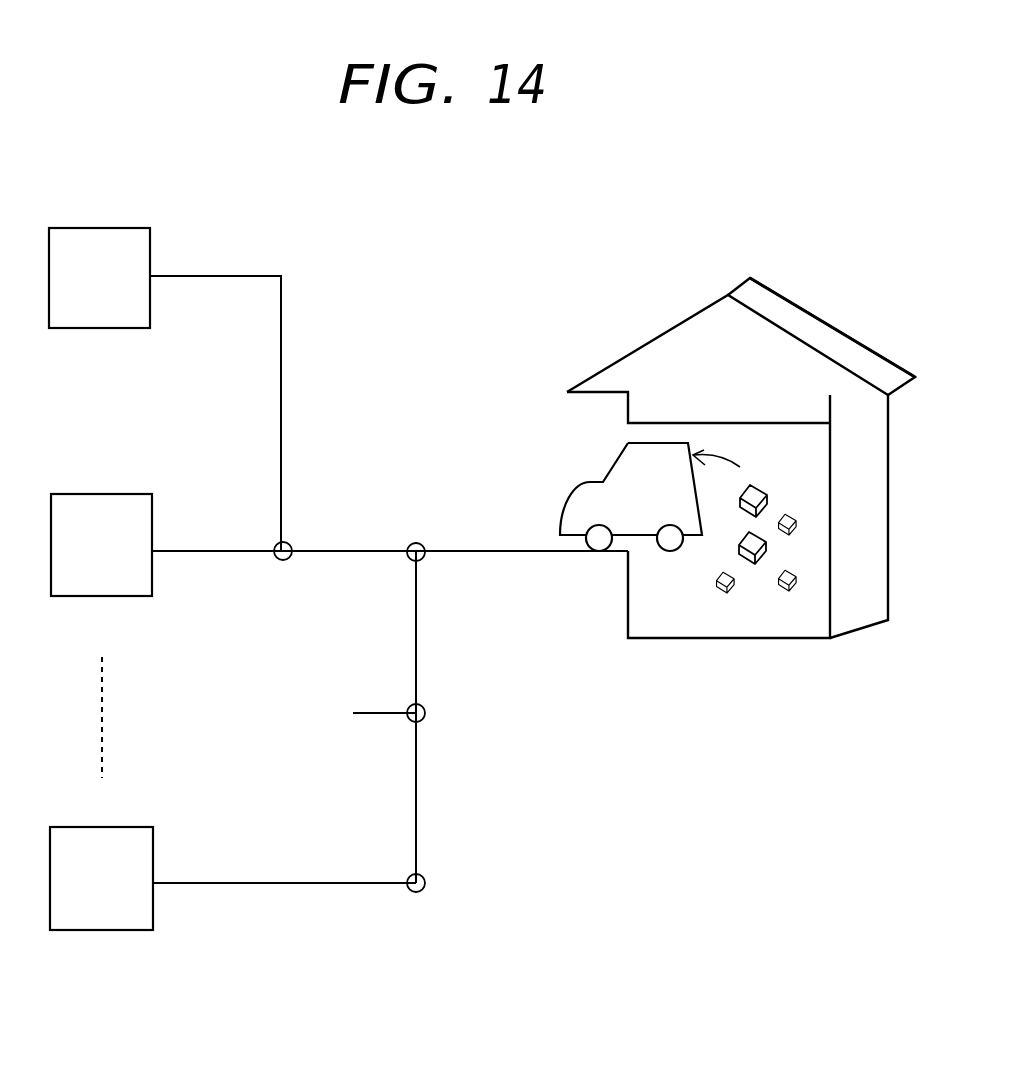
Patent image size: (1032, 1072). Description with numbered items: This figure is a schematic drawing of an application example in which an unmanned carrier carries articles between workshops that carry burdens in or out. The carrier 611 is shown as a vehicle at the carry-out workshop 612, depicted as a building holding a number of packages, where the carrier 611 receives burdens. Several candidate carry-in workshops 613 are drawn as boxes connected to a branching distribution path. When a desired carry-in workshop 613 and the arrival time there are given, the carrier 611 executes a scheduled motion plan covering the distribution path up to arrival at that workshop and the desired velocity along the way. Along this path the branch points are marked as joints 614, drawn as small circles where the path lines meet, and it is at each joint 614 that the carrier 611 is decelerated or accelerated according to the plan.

The carrier 611 is at (592, 483).
The carry-out workshop 612 is at (813, 640).
The carry-in workshop 613 is at (95, 595).
The joint 614 is at (410, 565).